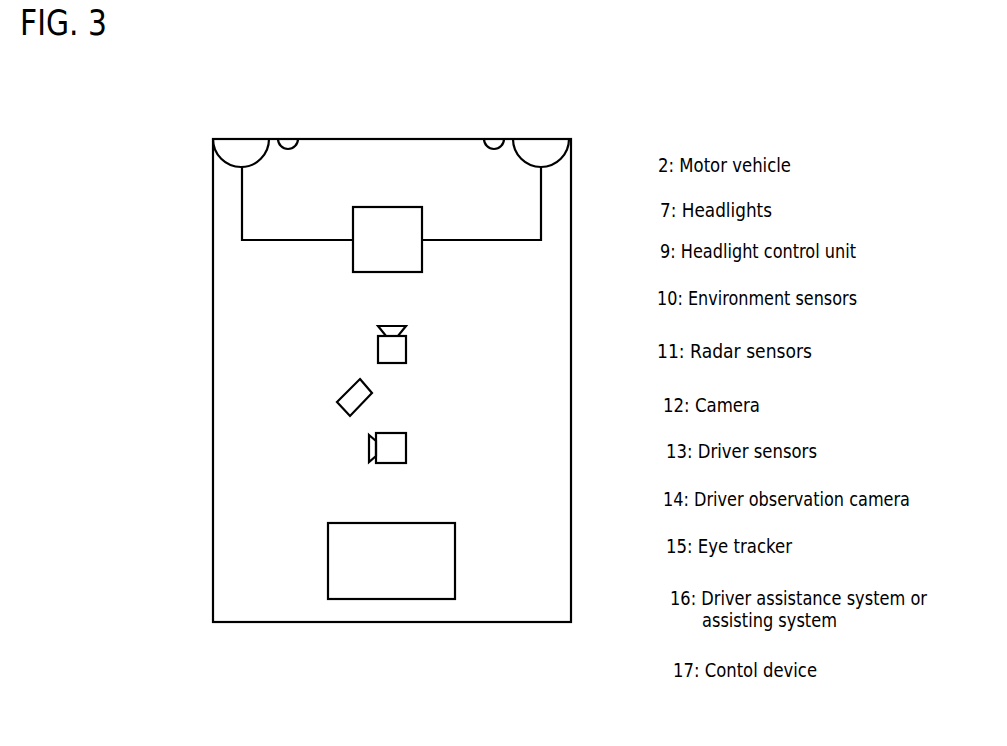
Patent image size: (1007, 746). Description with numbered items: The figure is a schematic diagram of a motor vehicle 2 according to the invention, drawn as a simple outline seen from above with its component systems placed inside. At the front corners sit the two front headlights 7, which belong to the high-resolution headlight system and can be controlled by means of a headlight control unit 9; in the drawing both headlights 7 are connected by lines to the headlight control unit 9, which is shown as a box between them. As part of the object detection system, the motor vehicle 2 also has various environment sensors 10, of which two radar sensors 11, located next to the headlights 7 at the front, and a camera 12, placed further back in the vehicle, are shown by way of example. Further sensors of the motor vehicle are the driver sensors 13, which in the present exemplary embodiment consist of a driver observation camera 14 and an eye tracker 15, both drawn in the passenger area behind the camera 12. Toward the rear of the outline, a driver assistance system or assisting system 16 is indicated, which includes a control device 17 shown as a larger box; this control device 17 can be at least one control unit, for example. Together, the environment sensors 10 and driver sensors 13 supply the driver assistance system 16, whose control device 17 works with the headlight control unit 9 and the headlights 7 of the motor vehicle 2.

The motor vehicle 2 is at (213, 200).
The front headlights 7 is at (245, 150).
The headlight control unit 9 is at (422, 253).
The environment sensors 10 is at (289, 163).
The radar sensors 11 is at (288, 145).
The camera 12 is at (378, 350).
The driver sensors 13 is at (388, 394).
The driver observation camera 14 is at (390, 463).
The eye tracker 15 is at (348, 391).
The driver assistance system or assisting system 16 is at (479, 536).
The control device 17 is at (328, 551).